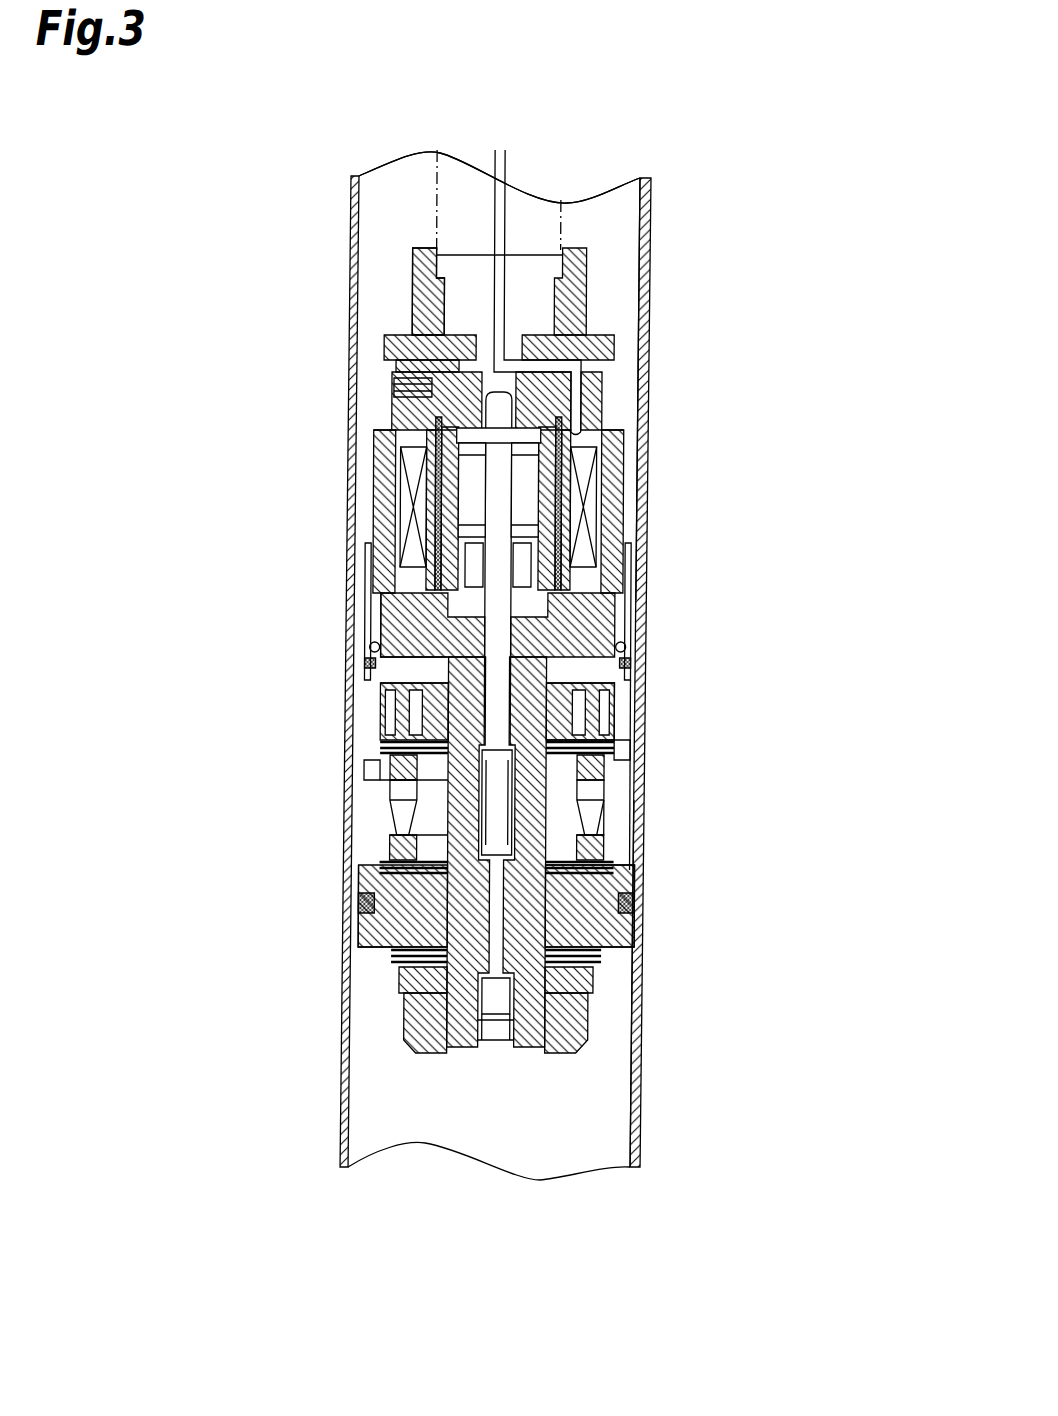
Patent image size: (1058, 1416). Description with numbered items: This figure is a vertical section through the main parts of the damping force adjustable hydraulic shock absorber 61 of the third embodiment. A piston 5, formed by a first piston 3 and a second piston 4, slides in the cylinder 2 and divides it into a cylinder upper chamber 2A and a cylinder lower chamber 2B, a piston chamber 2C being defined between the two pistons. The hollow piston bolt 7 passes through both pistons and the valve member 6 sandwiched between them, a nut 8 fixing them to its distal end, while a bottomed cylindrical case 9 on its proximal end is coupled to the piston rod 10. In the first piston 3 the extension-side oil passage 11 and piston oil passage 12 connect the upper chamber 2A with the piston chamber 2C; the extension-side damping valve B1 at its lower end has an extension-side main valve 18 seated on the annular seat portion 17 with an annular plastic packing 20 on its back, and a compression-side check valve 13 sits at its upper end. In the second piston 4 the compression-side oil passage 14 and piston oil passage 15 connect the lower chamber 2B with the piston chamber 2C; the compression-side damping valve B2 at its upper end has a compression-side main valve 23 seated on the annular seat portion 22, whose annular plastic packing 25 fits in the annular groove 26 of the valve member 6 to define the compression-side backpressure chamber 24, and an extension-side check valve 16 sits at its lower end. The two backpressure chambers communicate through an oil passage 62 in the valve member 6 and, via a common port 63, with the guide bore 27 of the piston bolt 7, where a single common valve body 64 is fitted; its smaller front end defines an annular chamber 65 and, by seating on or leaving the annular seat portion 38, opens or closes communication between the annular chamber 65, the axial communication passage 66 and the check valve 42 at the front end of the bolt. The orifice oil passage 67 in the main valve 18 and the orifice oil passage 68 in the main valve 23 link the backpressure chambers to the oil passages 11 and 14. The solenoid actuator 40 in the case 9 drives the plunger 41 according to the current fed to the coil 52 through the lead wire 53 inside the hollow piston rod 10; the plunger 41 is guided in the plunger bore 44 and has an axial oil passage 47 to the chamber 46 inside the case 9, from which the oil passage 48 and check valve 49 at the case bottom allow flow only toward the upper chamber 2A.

The cylinder 2 is at (652, 192).
The cylinder upper chamber 2A is at (628, 272).
The cylinder lower chamber 2B is at (620, 1118).
The piston chamber 2C is at (633, 798).
The first piston 3 is at (650, 728).
The second piston 4 is at (647, 932).
The piston 5 is at (805, 750).
The valve member 6 is at (400, 803).
The piston bolt 7 is at (600, 622).
The nut 8 is at (565, 1053).
The case 9 is at (615, 347).
The piston rod 10 is at (455, 150).
The extension-side oil passage 11 is at (367, 690).
The piston oil passage 12 is at (388, 706).
The compression-side check valve 13 is at (383, 640).
The compression-side oil passage 14 is at (640, 950).
The piston oil passage 15 is at (395, 951).
The extension-side check valve 16 is at (400, 963).
The annular seat portion 17 is at (383, 742).
The extension-side main valve 18 is at (383, 752).
The annular plastic packing 20 is at (633, 768).
The annular seat portion 22 is at (632, 862).
The compression-side main valve 23 is at (632, 858).
The compression-side backpressure chamber 24 is at (622, 832).
The annular plastic packing 25 is at (385, 918).
The annular groove 26 is at (383, 862).
The guide bore 27 is at (368, 600).
The annular seat portion 38 is at (520, 808).
The solenoid actuator 40 is at (627, 488).
The plunger 41 is at (603, 425).
The check valve 42 is at (470, 1050).
The plunger bore 44 is at (557, 560).
The chamber 46 is at (487, 402).
The oil passage 47 is at (437, 492).
The oil passage 48 is at (413, 332).
The check valve 49 is at (395, 385).
The coil 52 is at (410, 470).
The lead wire 53 is at (500, 172).
The damping force adjustable hydraulic shock absorber 61 is at (734, 209).
The oil passage 62 is at (393, 828).
The common port 63 is at (393, 845).
The valve body 64 is at (628, 647).
The annular chamber 65 is at (393, 793).
The communication passage 66 is at (395, 692).
The orifice oil passage 67 is at (393, 757).
The orifice oil passage 68 is at (632, 840).
The extension-side damping valve B1 is at (352, 767).
The compression-side damping valve B2 is at (370, 897).